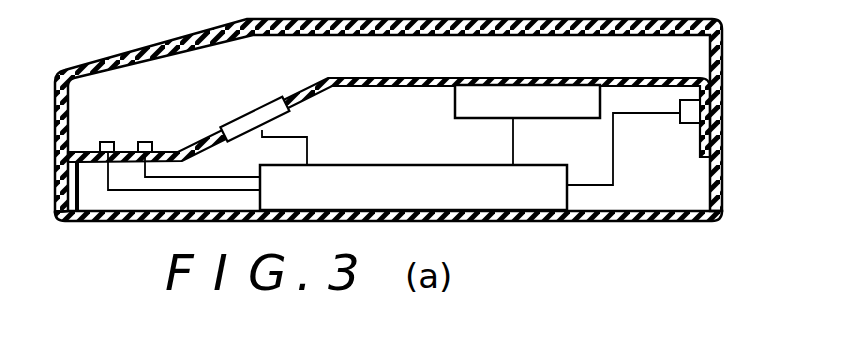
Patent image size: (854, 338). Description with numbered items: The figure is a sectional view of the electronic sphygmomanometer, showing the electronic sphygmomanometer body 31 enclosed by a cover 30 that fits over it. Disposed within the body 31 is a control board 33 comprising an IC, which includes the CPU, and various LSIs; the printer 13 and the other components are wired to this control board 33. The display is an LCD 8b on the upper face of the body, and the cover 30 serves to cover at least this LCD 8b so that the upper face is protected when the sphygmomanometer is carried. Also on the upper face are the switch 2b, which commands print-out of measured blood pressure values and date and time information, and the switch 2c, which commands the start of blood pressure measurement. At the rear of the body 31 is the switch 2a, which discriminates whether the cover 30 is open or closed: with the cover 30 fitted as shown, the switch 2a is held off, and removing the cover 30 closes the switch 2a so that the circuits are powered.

The cover 30 is at (722, 30).
The electronic sphygmomanometer body 31 is at (557, 223).
The control board 33 is at (396, 164).
The printer 13 is at (546, 121).
The LCD 8b is at (250, 111).
The switch 2a is at (677, 127).
The switch 2b is at (107, 141).
The switch 2c is at (143, 141).